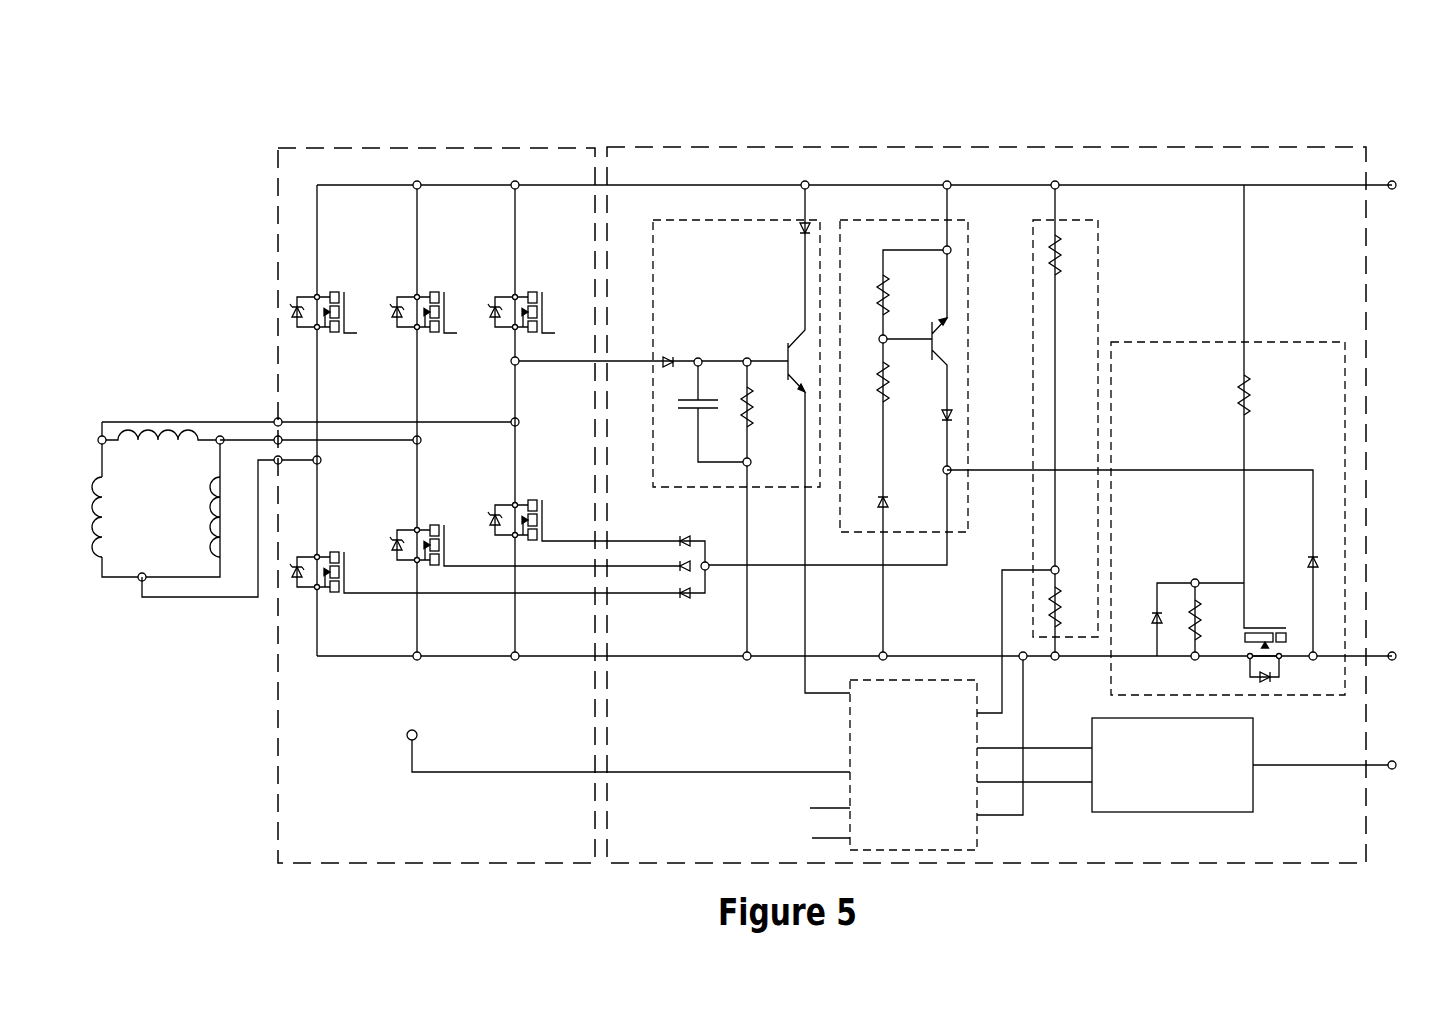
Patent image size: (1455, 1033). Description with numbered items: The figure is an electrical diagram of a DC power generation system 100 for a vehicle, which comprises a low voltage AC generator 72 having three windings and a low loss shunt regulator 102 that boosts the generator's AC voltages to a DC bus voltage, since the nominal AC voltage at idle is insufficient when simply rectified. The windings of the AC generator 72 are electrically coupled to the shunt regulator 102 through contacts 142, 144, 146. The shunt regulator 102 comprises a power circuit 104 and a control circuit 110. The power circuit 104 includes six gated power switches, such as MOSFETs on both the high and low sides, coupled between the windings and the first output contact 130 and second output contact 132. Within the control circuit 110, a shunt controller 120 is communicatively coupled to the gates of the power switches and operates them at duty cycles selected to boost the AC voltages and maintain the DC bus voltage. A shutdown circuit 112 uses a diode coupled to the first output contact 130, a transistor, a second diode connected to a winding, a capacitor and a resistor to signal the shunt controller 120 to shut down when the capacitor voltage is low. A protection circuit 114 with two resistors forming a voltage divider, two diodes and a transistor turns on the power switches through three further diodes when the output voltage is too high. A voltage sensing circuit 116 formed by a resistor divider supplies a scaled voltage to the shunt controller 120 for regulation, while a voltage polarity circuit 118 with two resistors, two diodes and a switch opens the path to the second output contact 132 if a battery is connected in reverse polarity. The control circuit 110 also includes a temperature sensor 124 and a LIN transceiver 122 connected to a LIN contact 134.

The DC power generation system 100 is at (168, 138).
The low loss shunt regulator 102 is at (272, 228).
The low voltage AC generator 72 is at (140, 422).
The power circuit 104 is at (476, 147).
The control circuit 110 is at (996, 146).
The shutdown circuit 112 is at (737, 219).
The protection circuit 114 is at (900, 219).
The voltage sensing circuit 116 is at (1098, 278).
The voltage polarity circuit 118 is at (1296, 341).
The shunt controller 120 is at (849, 728).
The LIN transceiver 122 is at (1170, 812).
The temperature sensor 124 is at (416, 724).
The first output contact 130 is at (1393, 179).
The second output contact 132 is at (1393, 650).
The LIN contact 134 is at (1393, 771).
The contact 142 is at (276, 418).
The contact 144 is at (276, 438).
The contact 146 is at (282, 464).